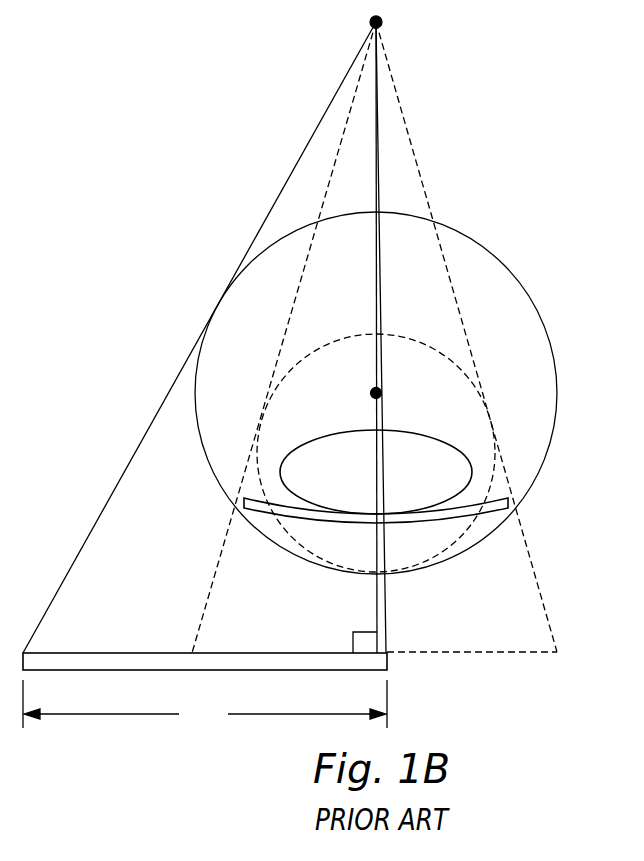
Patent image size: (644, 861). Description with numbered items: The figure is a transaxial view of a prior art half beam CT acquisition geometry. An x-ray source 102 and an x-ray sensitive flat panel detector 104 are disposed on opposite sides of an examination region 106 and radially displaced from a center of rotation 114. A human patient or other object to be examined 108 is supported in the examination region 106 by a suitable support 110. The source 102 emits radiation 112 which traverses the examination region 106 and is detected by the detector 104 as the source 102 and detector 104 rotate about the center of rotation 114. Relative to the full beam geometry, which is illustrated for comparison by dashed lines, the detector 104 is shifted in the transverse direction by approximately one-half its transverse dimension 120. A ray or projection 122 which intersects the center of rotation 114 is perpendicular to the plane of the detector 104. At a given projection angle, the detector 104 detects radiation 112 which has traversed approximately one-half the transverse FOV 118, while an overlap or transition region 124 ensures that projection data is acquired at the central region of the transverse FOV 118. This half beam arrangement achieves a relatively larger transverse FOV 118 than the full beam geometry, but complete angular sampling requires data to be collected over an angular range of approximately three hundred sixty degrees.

The x-ray source 102 is at (370, 23).
The x-ray sensitive detector 104 is at (167, 662).
The examination region 106 is at (262, 357).
The object to be examined 108 is at (450, 446).
The support 110 is at (450, 518).
The radiation 112 is at (157, 522).
The center of rotation 114 is at (382, 393).
The transverse FOV 118 is at (497, 255).
The detector transverse dimension 120 is at (205, 704).
The ray or projection 122 is at (377, 595).
The overlap or transition region 124 is at (387, 660).